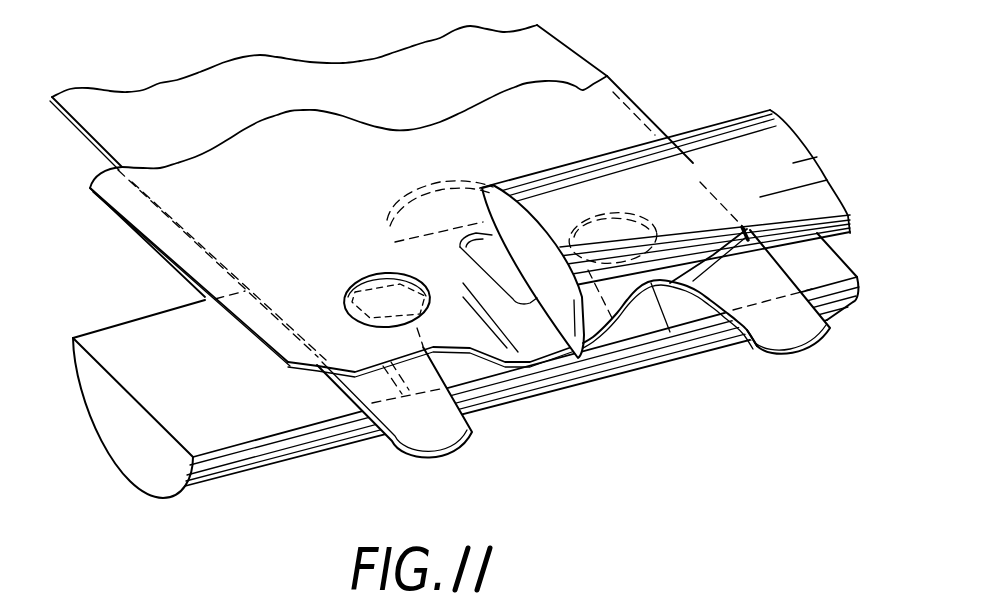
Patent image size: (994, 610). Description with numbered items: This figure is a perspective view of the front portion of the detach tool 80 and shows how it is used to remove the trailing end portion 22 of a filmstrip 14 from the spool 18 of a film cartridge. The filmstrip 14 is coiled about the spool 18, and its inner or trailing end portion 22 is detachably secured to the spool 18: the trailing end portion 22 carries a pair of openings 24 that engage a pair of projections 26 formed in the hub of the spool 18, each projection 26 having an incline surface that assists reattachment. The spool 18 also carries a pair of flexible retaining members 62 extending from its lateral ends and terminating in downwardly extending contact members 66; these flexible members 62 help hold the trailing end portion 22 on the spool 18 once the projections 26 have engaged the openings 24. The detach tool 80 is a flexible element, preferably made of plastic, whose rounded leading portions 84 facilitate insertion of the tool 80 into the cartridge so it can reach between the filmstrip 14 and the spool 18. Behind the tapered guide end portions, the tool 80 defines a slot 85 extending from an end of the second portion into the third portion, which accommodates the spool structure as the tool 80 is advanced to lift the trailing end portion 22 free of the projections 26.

The filmstrip 14 is at (640, 103).
The spool 18 is at (147, 453).
The trailing end portion 22 is at (160, 228).
The openings 24 is at (380, 273).
The projections 26 is at (343, 307).
The flexible retaining members 62 is at (793, 140).
The contact members 66 is at (609, 350).
The detach tool 80 is at (563, 43).
The leading portions 84 is at (447, 432).
The slot 85 is at (427, 352).